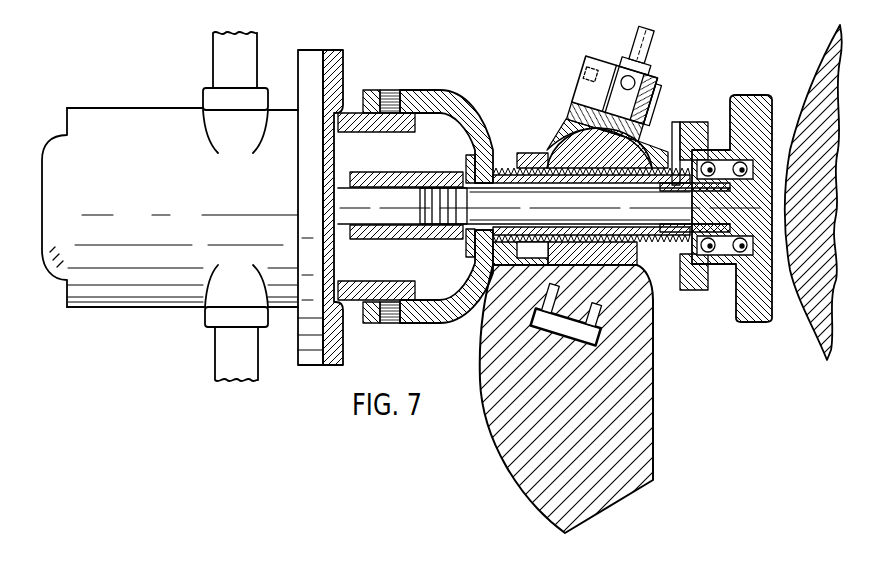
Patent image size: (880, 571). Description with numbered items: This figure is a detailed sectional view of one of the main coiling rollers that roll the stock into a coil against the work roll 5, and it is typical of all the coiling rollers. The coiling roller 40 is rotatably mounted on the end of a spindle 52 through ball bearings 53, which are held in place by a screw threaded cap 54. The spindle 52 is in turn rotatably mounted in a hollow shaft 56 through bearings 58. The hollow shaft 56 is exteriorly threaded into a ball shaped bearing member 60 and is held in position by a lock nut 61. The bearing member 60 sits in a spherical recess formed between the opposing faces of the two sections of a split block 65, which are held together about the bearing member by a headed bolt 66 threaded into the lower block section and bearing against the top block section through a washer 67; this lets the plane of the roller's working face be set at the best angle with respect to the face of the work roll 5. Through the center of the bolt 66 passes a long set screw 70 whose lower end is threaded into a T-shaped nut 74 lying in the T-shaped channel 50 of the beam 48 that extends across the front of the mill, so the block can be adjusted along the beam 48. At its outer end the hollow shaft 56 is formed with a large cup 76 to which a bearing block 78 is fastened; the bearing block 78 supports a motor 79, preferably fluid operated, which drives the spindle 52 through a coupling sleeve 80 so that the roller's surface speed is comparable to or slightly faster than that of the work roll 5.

The work roll 5 is at (800, 324).
The main coiling roller 40 is at (745, 97).
The beam 48 is at (640, 433).
The T-shaped channel 50 is at (601, 337).
The spindle 52 is at (633, 248).
The ball bearings 53 is at (710, 134).
The screw threaded cap 54 is at (668, 124).
The hollow shaft 56 is at (511, 157).
The bearings 58 is at (480, 150).
The ball shaped bearing member 60 is at (578, 128).
The lock nut 61 is at (533, 259).
The split block 65 is at (604, 88).
The headed bolt 66 is at (660, 88).
The washer 67 is at (583, 88).
The set screw 70 is at (646, 46).
The T-shaped nut 74 is at (537, 321).
The cup 76 is at (437, 97).
The bearing block 78 is at (338, 63).
The motor 79 is at (280, 108).
The coupling sleeve 80 is at (425, 174).